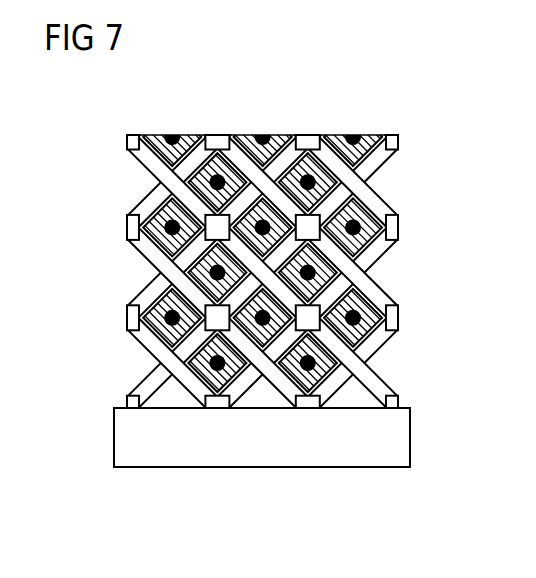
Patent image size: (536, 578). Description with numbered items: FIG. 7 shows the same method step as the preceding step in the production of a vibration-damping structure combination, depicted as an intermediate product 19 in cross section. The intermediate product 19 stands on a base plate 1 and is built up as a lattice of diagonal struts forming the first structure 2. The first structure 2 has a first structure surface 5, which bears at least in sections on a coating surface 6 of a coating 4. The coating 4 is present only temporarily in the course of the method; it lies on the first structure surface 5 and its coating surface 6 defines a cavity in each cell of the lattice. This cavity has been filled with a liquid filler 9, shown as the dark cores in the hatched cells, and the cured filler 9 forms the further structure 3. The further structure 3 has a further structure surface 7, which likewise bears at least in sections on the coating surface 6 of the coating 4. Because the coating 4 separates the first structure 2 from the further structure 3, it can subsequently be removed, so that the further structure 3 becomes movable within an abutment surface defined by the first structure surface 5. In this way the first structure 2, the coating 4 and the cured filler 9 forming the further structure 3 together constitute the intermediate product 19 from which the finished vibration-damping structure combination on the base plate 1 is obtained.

The base plate 1 is at (262, 453).
The first structure 2 is at (308, 134).
The further structure 3 is at (396, 318).
The coating 4 is at (237, 133).
The first structure surface 5 is at (328, 149).
The coating surface 6 is at (172, 119).
The further structure surface 7 is at (181, 133).
The filler 9 is at (361, 319).
The intermediate product 19 is at (268, 283).